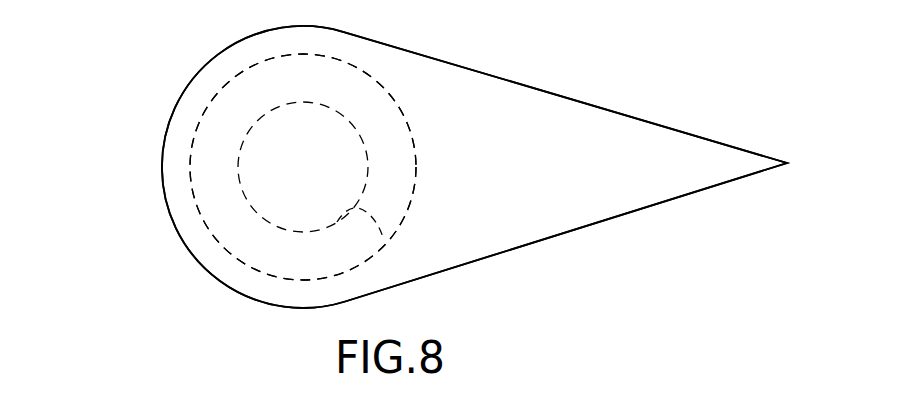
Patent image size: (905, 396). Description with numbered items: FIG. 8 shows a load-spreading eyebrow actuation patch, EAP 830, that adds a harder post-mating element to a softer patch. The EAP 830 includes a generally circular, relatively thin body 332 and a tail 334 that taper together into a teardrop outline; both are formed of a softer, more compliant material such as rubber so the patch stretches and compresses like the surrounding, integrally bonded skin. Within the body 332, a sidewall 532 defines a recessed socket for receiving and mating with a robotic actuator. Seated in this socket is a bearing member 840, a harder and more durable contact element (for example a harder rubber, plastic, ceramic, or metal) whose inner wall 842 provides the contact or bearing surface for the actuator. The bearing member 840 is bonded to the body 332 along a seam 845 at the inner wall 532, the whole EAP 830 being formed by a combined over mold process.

The EAP 830 is at (142, 137).
The body 332 is at (177, 228).
The tail 334 is at (585, 225).
The sidewall 532 is at (370, 60).
The bearing member 840 is at (392, 122).
The seam 845 is at (413, 167).
The inner wall 842 is at (384, 239).